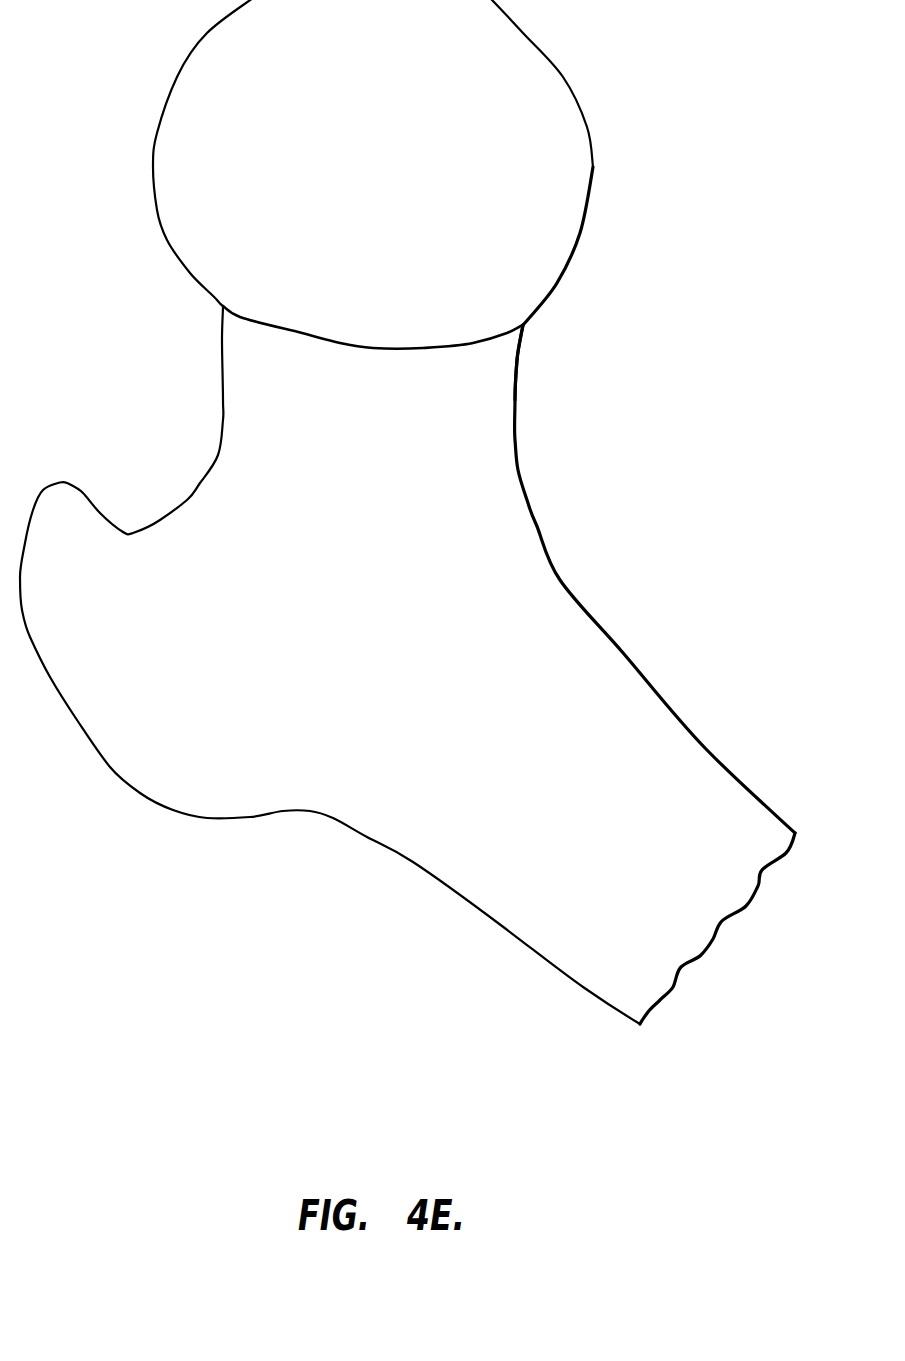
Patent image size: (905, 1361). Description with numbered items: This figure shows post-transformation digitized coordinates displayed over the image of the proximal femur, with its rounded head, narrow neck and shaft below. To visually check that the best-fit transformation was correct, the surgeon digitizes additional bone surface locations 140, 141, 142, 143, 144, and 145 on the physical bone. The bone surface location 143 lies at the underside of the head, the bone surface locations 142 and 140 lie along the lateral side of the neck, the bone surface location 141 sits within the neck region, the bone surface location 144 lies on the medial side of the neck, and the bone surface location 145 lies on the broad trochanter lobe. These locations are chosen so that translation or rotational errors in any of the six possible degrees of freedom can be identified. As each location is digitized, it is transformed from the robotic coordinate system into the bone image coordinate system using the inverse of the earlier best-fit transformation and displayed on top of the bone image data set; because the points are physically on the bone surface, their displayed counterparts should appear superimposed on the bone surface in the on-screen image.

The bone surface location 140 is at (515, 437).
The bone surface location 141 is at (355, 518).
The bone surface location 142 is at (468, 358).
The bone surface location 143 is at (378, 362).
The bone surface location 144 is at (222, 422).
The bone surface location 145 is at (170, 713).